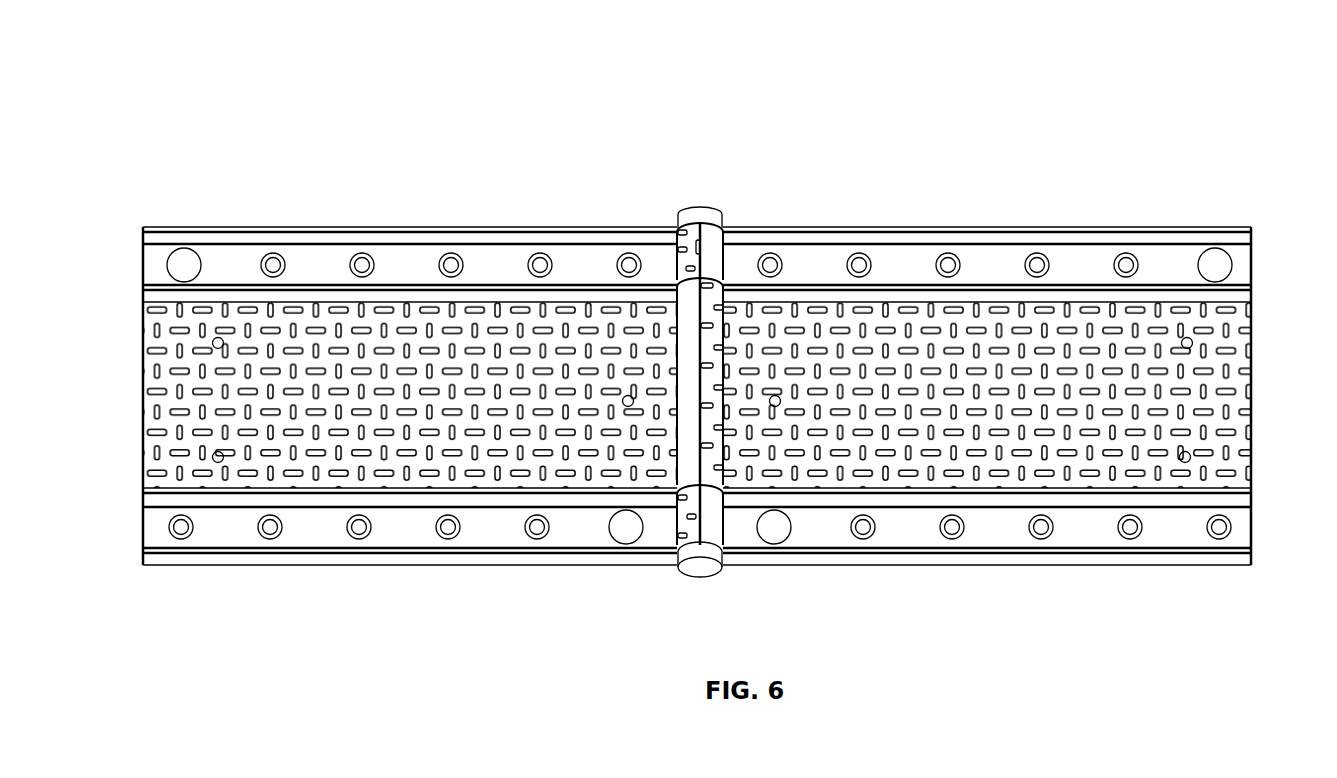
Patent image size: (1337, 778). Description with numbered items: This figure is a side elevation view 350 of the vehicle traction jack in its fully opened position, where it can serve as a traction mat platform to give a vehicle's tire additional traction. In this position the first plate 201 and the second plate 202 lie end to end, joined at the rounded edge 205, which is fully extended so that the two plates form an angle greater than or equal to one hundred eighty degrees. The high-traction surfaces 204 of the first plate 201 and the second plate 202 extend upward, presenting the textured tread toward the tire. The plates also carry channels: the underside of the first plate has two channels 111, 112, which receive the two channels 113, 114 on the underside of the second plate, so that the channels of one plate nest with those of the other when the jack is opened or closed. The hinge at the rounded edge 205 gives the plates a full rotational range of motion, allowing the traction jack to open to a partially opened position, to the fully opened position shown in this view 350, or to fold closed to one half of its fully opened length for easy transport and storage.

The side elevation view 350 is at (155, 135).
The channel 113 is at (168, 261).
The channel 111 is at (1231, 262).
The channel 114 is at (168, 525).
The channel 112 is at (1233, 527).
The high-traction surface 204 is at (138, 303).
The second plate 202 is at (437, 445).
The first plate 201 is at (958, 445).
The rounded edge 205 is at (690, 527).